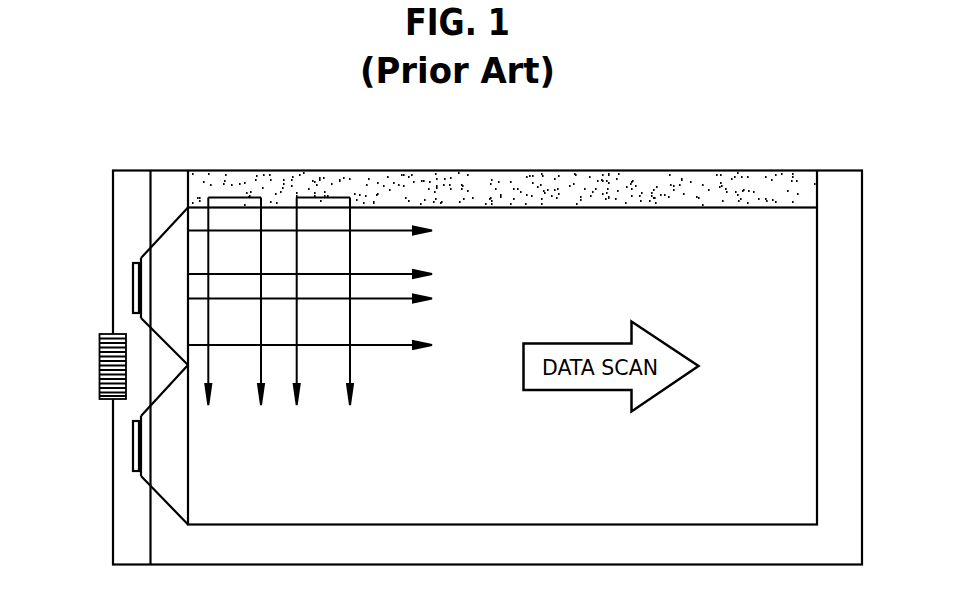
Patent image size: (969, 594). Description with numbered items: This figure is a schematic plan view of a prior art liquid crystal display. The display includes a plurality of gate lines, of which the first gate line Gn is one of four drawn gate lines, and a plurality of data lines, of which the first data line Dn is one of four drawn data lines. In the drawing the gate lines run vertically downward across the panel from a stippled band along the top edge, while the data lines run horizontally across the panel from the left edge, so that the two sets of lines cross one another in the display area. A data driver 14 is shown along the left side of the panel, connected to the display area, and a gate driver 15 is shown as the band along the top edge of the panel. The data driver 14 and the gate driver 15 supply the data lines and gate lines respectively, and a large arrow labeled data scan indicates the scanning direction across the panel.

The data driver 14 is at (133, 288).
The gate driver 15 is at (573, 188).
The first gate line Gn is at (202, 195).
The first data line Dn is at (403, 227).